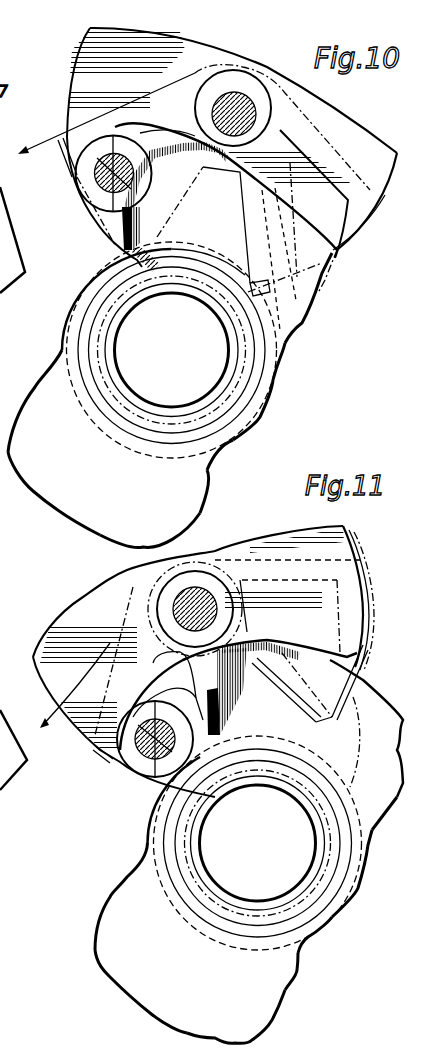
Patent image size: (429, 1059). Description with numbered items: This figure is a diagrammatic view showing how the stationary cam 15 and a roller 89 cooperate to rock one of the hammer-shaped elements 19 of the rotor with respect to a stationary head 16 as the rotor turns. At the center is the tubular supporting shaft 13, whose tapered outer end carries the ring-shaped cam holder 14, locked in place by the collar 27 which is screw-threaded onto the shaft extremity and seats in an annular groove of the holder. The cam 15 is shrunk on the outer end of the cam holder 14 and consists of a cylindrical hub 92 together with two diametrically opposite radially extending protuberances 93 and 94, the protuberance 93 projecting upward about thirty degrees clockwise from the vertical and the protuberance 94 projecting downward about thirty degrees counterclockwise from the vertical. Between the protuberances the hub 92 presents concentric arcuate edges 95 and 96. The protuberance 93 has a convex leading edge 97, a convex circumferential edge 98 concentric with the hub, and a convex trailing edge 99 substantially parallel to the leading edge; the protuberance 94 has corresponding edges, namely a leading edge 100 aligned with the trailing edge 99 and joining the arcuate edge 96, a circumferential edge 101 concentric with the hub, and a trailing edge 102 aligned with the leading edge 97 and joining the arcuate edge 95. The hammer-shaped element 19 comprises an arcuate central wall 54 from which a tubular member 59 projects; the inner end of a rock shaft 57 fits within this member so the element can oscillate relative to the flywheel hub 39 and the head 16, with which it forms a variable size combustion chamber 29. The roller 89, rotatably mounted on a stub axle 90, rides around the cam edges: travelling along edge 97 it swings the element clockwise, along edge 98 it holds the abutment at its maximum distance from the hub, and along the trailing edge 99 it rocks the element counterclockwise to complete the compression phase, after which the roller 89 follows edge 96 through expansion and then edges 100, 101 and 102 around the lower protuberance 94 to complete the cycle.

In FIG. 10, the tubular supporting shaft 13 is at (115, 338).
In FIG. 11, the tubular supporting shaft 13 is at (200, 841).
In FIG. 10, the cam holder 14 is at (83, 401).
In FIG. 11, the cam holder 14 is at (182, 912).
In FIG. 10, the cam 15 is at (236, 446).
In FIG. 11, the cam 15 is at (303, 962).
In FIG. 10, the head 16 is at (127, 250).
In FIG. 11, the head 16 is at (228, 698).
In FIG. 10, the hammer-shaped element 19 is at (216, 51).
In FIG. 11, the hammer-shaped element 19 is at (113, 596).
In FIG. 10, the collar 27 is at (98, 367).
In FIG. 11, the collar 27 is at (186, 853).
In FIG. 11, the combustion chamber 29 is at (238, 695).
In FIG. 11, the flywheel hub 39 is at (157, 605).
In FIG. 10, the arcuate central wall 54 is at (165, 130).
In FIG. 10, the rock shaft 57 is at (242, 93).
In FIG. 11, the rock shaft 57 is at (208, 598).
In FIG. 10, the tubular member 59 is at (260, 98).
In FIG. 11, the tubular member 59 is at (152, 652).
In FIG. 10, the roller 89 is at (105, 168).
In FIG. 11, the roller 89 is at (123, 745).
In FIG. 10, the stub axle 90 is at (120, 194).
In FIG. 11, the stub axle 90 is at (143, 750).
In FIG. 10, the cylindrical hub 92 is at (263, 418).
In FIG. 11, the cylindrical hub 92 is at (374, 830).
In FIG. 10, the protuberance 93 is at (239, 246).
In FIG. 11, the protuberance 93 is at (306, 720).
In FIG. 10, the protuberance 94 is at (150, 518).
In FIG. 11, the protuberance 94 is at (236, 1001).
In FIG. 11, the arcuate edge 95 is at (376, 835).
In FIG. 10, the arcuate edge 96 is at (80, 293).
In FIG. 11, the arcuate edge 96 is at (149, 821).
In FIG. 10, the leading edge 97 is at (304, 323).
In FIG. 10, the circumferential edge 98 is at (306, 222).
In FIG. 11, the circumferential edge 98 is at (366, 685).
In FIG. 10, the trailing edge 99 is at (123, 238).
In FIG. 11, the trailing edge 99 is at (235, 684).
In FIG. 10, the leading edge 100 is at (40, 385).
In FIG. 11, the leading edge 100 is at (107, 921).
In FIG. 10, the circumferential edge 101 is at (45, 508).
In FIG. 11, the circumferential edge 101 is at (153, 1012).
In FIG. 10, the trailing edge 102 is at (201, 510).
In FIG. 11, the trailing edge 102 is at (299, 980).